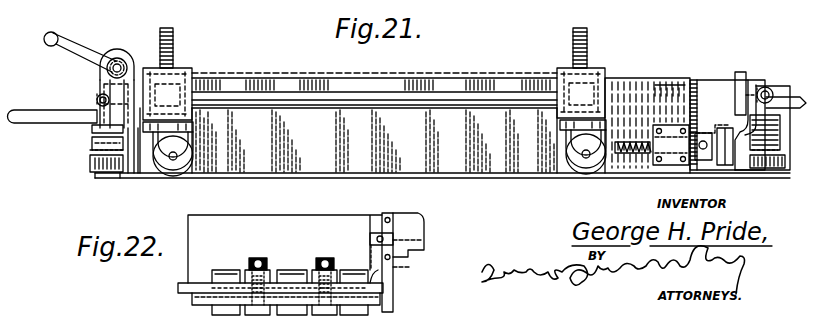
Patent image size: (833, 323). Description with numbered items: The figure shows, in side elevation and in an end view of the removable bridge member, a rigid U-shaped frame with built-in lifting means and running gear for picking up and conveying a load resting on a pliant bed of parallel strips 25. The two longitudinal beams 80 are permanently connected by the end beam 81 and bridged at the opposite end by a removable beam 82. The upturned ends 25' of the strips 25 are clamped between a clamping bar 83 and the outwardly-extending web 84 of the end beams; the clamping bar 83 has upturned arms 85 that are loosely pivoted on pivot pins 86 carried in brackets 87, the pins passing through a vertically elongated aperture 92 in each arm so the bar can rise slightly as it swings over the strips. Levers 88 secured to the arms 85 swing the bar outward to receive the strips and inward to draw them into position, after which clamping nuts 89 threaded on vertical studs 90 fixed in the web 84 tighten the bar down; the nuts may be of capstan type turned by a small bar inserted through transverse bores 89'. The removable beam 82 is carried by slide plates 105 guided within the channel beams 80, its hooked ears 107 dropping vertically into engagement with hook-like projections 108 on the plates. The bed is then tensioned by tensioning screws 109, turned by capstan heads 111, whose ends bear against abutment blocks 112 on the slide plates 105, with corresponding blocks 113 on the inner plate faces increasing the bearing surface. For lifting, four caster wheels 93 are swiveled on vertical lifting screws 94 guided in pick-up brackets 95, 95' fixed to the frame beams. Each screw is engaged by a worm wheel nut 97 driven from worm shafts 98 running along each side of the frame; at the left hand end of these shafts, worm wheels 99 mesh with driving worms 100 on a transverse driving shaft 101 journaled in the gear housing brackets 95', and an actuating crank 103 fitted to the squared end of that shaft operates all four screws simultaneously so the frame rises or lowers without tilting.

In FIG. 21, the strips 25 is at (374, 140).
In FIG. 21, the upturned ends of strips 25' is at (74, 162).
In FIG. 22, the upturned ends of strips 25' is at (312, 273).
In FIG. 21, the longitudinal beams 80 is at (496, 78).
In FIG. 21, the end beam 81 is at (126, 178).
In FIG. 21, the removable bridge beam 82 is at (740, 72).
In FIG. 22, the removable bridge beam 82 is at (216, 268).
In FIG. 21, the clamping bar 83 is at (91, 160).
In FIG. 22, the clamping bar 83 is at (186, 284).
In FIG. 21, the flange or web 84 is at (96, 178).
In FIG. 22, the flange or web 84 is at (190, 300).
In FIG. 21, the arms 85 is at (93, 144).
In FIG. 22, the arms 85 is at (380, 270).
In FIG. 21, the pivot pins 86 is at (97, 102).
In FIG. 22, the pivot pins 86 is at (424, 240).
In FIG. 21, the brackets 87 is at (100, 94).
In FIG. 22, the brackets 87 is at (394, 214).
In FIG. 21, the levers 88 is at (32, 114).
In FIG. 22, the levers 88 is at (370, 250).
In FIG. 22, the clamping nuts 89 is at (261, 268).
In FIG. 22, the transverse bores 89' is at (316, 275).
In FIG. 22, the vertical studs 90 is at (248, 271).
In FIG. 21, the vertically elongated aperture 92 is at (792, 110).
In FIG. 22, the vertically elongated aperture 92 is at (410, 267).
In FIG. 21, the caster wheels 93 is at (194, 152).
In FIG. 21, the screw lifting elements 94 is at (173, 46).
In FIG. 21, the supporting bracket 95 is at (566, 81).
In FIG. 21, the gear housing bracket 95' is at (186, 87).
In FIG. 21, the worm wheel nut 97 is at (608, 70).
In FIG. 21, the worm shafts 98 is at (286, 96).
In FIG. 21, the worm wheels 99 is at (95, 130).
In FIG. 21, the driving worms 100 is at (117, 53).
In FIG. 21, the transverse driving shaft 101 is at (124, 60).
In FIG. 21, the actuating crank 103 is at (62, 50).
In FIG. 21, the slide plates 105 is at (706, 84).
In FIG. 21, the hooked ears or projections 107 is at (736, 94).
In FIG. 22, the hooked ears or projections 107 is at (418, 226).
In FIG. 21, the hook-like projections 108 is at (752, 88).
In FIG. 21, the tensioning screws 109 is at (630, 155).
In FIG. 21, the capstan heads 111 is at (703, 161).
In FIG. 21, the abutment blocks 112 is at (724, 166).
In FIG. 21, the blocks 113 is at (700, 128).